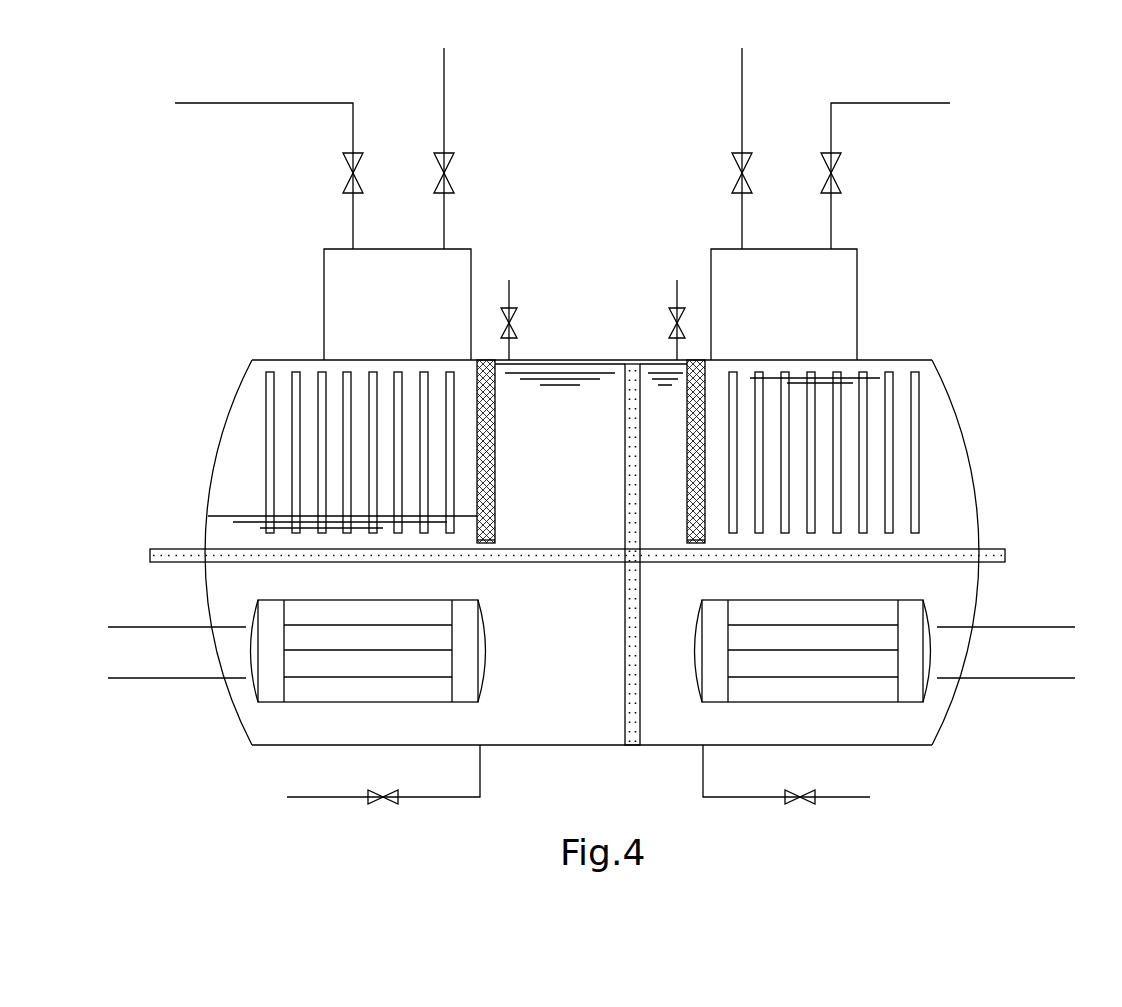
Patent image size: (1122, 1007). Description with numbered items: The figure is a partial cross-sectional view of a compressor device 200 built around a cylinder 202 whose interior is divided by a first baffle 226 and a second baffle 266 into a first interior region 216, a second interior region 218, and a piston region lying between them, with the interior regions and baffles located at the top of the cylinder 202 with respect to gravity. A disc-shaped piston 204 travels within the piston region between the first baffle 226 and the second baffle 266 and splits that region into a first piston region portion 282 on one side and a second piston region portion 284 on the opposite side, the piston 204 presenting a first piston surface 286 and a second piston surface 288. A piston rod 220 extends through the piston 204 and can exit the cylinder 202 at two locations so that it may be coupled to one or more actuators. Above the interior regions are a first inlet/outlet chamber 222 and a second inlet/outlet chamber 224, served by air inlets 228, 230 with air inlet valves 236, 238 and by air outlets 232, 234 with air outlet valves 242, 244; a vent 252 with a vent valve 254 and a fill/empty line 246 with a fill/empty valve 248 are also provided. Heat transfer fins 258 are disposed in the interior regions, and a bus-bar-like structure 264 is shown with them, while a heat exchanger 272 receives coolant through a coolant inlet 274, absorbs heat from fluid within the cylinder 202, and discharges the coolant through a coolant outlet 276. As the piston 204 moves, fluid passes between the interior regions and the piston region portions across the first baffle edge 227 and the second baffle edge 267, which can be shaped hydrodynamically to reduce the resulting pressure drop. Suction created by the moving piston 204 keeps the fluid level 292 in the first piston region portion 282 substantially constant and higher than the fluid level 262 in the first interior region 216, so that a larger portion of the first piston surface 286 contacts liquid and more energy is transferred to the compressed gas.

The compressor device 200 is at (1022, 316).
The cylinder 202 is at (940, 730).
The piston 204 is at (625, 605).
The first interior region 216 is at (230, 440).
The second interior region 218 is at (943, 458).
The piston rod 220 is at (1007, 556).
The first inlet/outlet chamber 222 is at (324, 323).
The second inlet/outlet chamber 224 is at (857, 289).
The first baffle 226 is at (497, 426).
The first baffle edge 227 is at (495, 547).
The air inlet 228 is at (205, 103).
The air inlet 230 is at (890, 103).
The air outlet 232 is at (445, 76).
The air outlet 234 is at (742, 78).
The air inlet valve 236 is at (350, 176).
The air inlet valve 238 is at (834, 176).
The air outlet valve 242 is at (447, 176).
The air outlet valve 244 is at (740, 175).
The fill/empty line 246 is at (333, 797).
The fill/empty valve 248 is at (387, 800).
The vent 252 is at (511, 292).
The vent valve 254 is at (513, 323).
The fin 258 is at (265, 380).
The fluid level 262 is at (225, 516).
The second bus bar 264 is at (766, 377).
The second baffle 266 is at (688, 462).
The second baffle edge 267 is at (698, 547).
The heat exchanger 272 is at (495, 688).
The coolant inlet 274 is at (172, 627).
The coolant outlet 276 is at (176, 680).
The first piston region portion 282 is at (557, 465).
The second piston region portion 284 is at (655, 504).
The first piston surface 286 is at (624, 420).
The second piston surface 288 is at (660, 434).
The fluid level 292 is at (545, 364).